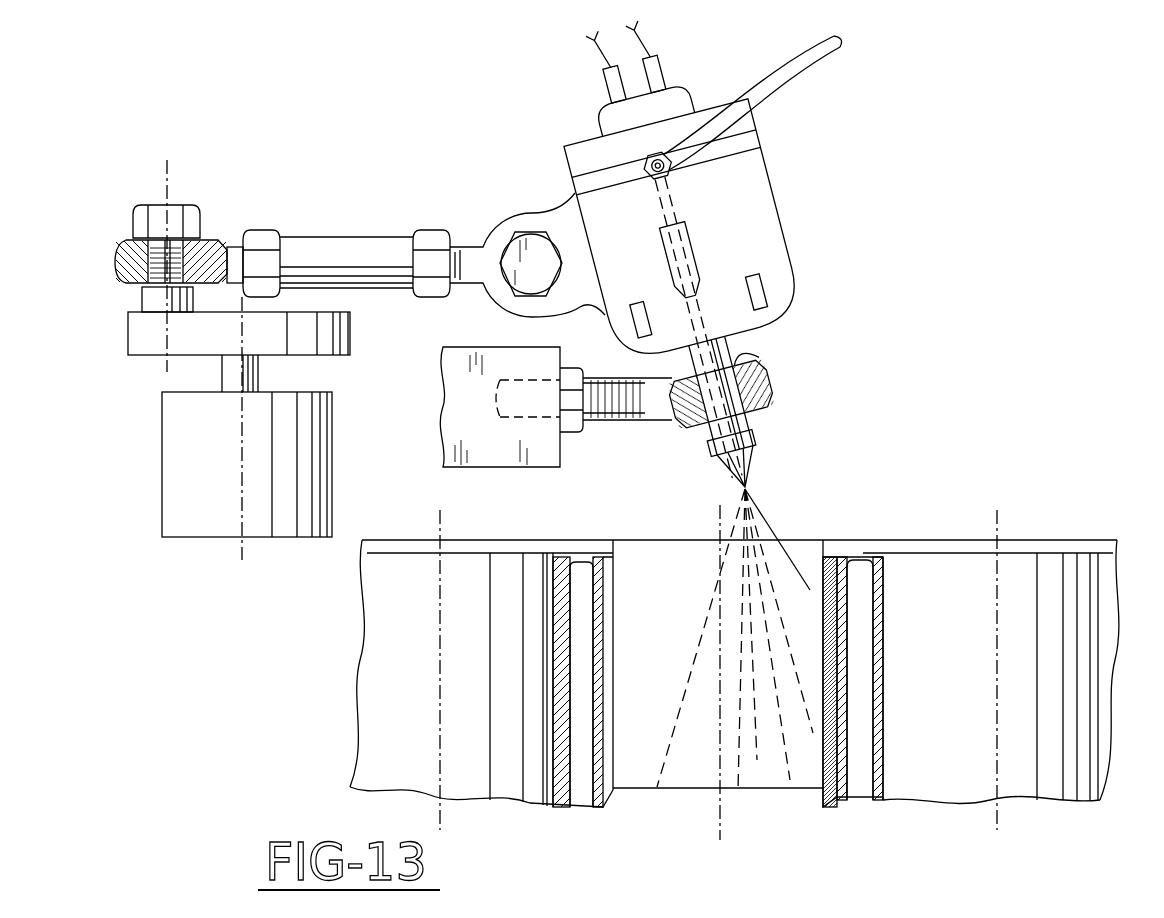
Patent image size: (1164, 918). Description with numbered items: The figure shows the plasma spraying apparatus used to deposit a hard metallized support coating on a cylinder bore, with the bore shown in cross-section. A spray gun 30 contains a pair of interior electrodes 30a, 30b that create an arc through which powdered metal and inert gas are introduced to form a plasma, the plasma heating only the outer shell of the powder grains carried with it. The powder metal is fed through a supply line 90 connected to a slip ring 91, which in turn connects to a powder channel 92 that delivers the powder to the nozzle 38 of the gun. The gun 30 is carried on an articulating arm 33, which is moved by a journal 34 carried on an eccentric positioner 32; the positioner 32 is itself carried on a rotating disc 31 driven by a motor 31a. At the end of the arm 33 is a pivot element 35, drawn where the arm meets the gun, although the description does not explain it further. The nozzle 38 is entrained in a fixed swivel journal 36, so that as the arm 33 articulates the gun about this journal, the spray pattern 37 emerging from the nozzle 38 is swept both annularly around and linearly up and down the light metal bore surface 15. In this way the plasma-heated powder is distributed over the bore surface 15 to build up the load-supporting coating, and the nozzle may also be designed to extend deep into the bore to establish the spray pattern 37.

The bore surface 15 is at (613, 603).
The spray gun 30 is at (750, 205).
The interior electrode 30a is at (768, 393).
The interior electrode 30b is at (710, 452).
The rotating disc 31 is at (312, 341).
The motor 31a is at (303, 462).
The eccentric positioner 32 is at (152, 297).
The articulating arm 33 is at (318, 253).
The journal 34 is at (194, 240).
The pivot bolt 35 is at (541, 242).
The fixed swivel journal 36 is at (757, 378).
The spray pattern 37 is at (793, 534).
The nozzle 38 is at (755, 447).
The supply line 90 is at (826, 46).
The slip ring 91 is at (748, 130).
The powder channel 92 is at (681, 210).